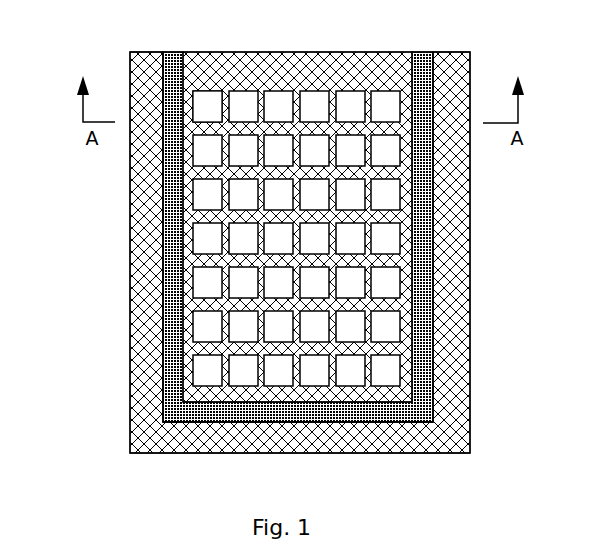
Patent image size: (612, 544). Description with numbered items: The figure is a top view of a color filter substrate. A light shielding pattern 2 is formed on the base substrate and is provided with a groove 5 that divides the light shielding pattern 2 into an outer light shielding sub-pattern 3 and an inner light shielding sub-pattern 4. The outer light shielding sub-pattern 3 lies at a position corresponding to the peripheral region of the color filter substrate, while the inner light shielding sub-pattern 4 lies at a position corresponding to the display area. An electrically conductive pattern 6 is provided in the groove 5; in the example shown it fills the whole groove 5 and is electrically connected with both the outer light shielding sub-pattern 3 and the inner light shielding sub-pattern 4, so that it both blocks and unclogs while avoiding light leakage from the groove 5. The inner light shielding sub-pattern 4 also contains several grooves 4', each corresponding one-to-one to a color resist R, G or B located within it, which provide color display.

The light shielding pattern 2 is at (66, 235).
The outer light shielding sub-pattern 3 is at (128, 248).
The inner light shielding sub-pattern 4 is at (241, 227).
The groove 4' is at (178, 66).
The groove 5 is at (148, 218).
The electrically conductive pattern 6 is at (158, 186).